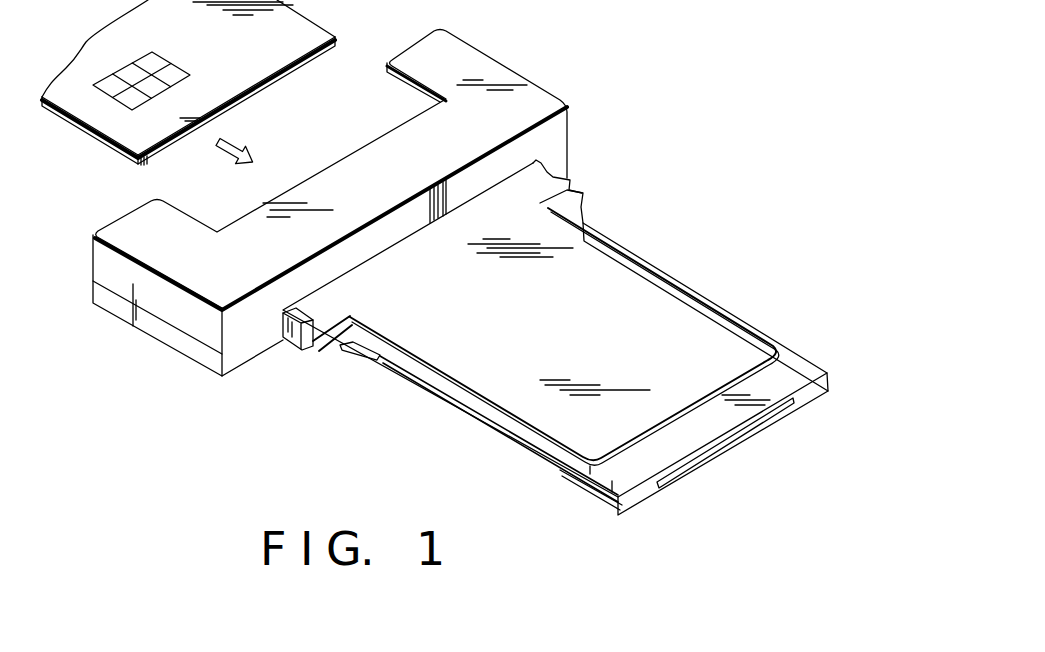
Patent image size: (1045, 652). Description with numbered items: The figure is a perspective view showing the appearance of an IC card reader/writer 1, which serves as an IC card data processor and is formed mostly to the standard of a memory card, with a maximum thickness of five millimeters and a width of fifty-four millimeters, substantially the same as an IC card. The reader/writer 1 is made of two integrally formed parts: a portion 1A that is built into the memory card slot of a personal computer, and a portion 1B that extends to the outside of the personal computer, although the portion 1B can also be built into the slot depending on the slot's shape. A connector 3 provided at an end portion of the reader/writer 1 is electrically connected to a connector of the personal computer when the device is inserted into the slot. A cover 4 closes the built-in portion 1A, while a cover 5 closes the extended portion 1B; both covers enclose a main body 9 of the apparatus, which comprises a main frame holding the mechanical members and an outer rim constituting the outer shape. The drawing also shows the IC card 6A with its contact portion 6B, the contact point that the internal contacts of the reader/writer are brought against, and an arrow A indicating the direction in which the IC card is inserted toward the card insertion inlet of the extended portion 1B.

The IC card reader/writer 1 is at (483, 273).
The portion built in the slot 1A is at (932, 311).
The portion extended to the outside 1B is at (441, 27).
The connector 3 is at (712, 456).
The cover 4 is at (428, 358).
The cover 5 is at (182, 328).
The IC card 6A is at (335, 41).
The contact portion 6B is at (110, 88).
The main body 9 is at (622, 278).
The card insertion direction A is at (246, 147).